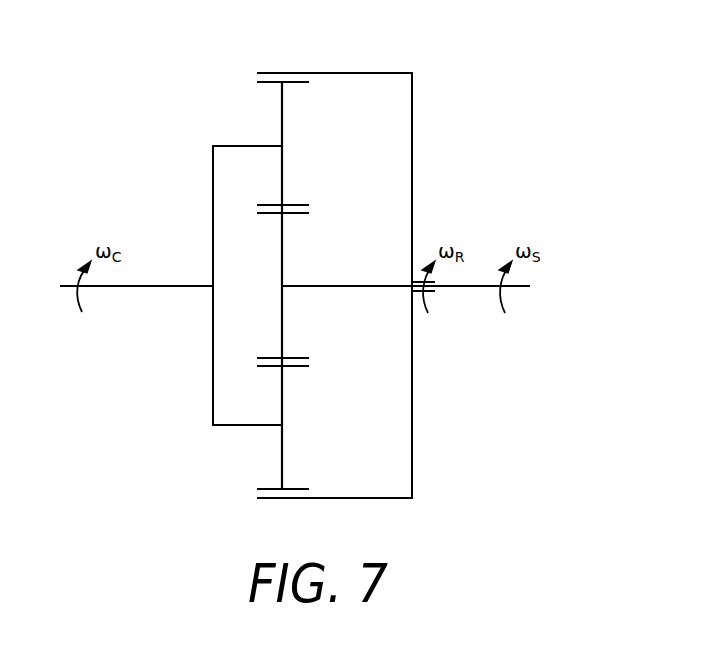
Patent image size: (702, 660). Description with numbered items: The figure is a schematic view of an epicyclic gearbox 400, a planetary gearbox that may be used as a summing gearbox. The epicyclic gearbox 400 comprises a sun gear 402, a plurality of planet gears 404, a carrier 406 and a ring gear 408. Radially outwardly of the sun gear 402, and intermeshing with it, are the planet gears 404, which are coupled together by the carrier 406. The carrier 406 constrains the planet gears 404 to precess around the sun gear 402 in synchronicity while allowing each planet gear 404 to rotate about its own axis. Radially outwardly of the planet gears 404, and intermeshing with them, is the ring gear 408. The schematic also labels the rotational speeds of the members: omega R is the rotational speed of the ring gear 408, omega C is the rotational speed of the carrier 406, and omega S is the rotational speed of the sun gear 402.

The epicyclic gearbox 400 is at (452, 153).
The sun gear 402 is at (282, 328).
The planet gears 404 is at (281, 115).
The carrier 406 is at (213, 180).
The ring gear 408 is at (385, 73).